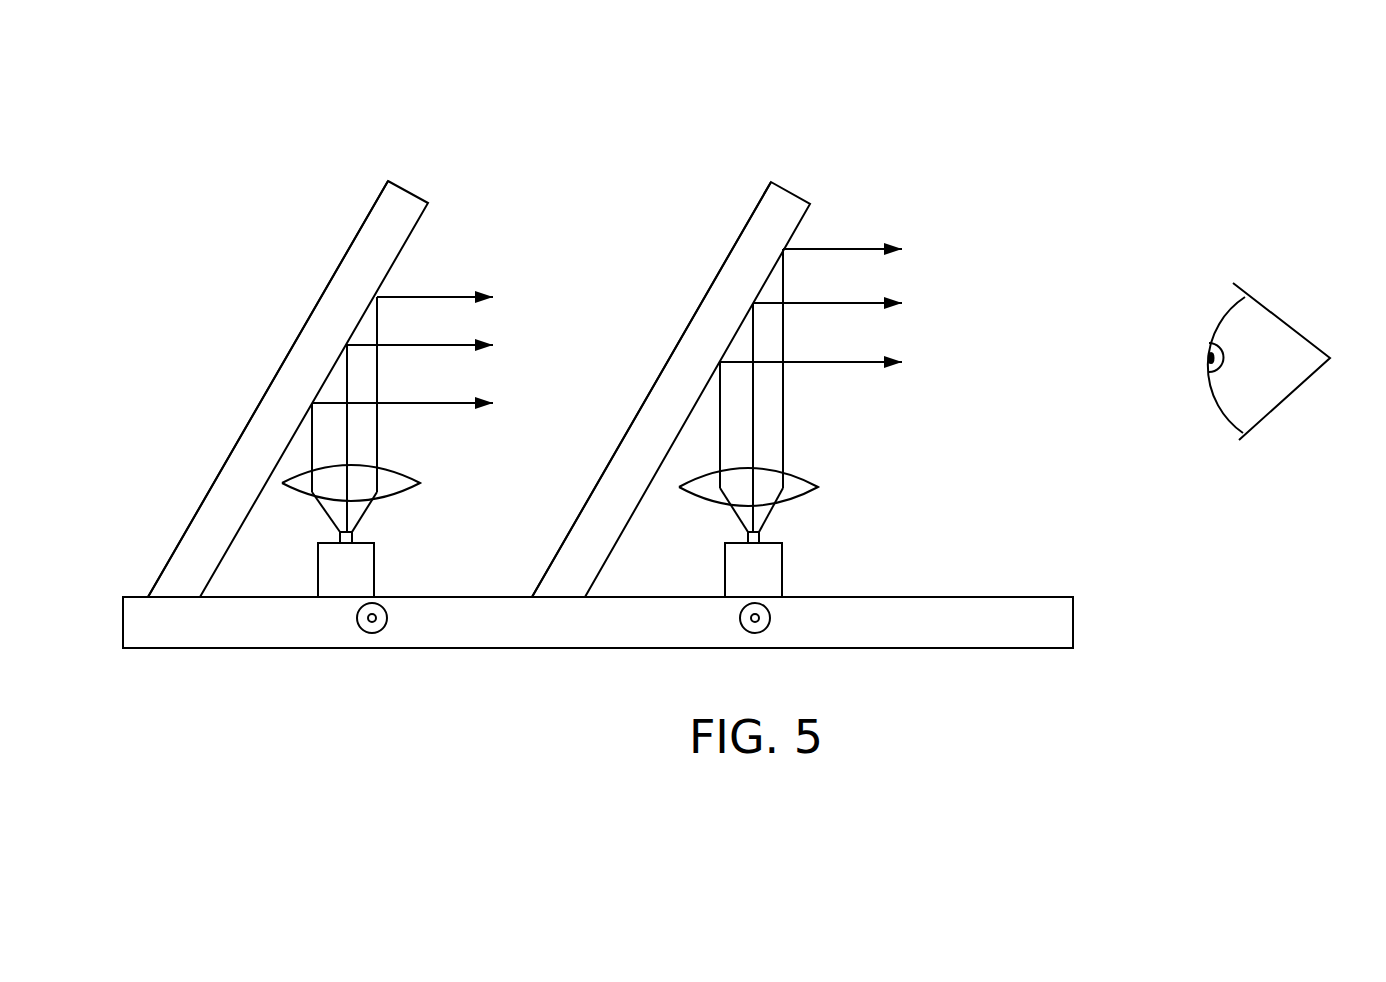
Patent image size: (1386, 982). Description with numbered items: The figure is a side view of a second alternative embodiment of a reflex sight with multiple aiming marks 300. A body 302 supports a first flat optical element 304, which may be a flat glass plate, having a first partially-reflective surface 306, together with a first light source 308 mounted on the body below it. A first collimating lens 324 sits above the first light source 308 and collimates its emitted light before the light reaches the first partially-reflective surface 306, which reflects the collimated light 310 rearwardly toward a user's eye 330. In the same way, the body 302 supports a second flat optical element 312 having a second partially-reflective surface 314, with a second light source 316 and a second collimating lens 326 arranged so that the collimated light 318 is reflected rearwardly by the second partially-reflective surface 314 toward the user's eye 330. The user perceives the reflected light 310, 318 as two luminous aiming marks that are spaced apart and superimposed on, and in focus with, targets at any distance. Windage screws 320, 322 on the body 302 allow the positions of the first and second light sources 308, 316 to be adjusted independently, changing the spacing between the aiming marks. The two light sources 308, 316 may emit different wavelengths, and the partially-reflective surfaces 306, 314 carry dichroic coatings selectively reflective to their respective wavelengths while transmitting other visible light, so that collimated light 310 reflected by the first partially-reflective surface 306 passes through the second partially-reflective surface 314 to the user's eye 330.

The reflex sight with multiple aiming marks 300 is at (943, 90).
The body 302 is at (623, 648).
The first flat optical element 304 is at (413, 192).
The first partially-reflective surface 306 is at (225, 557).
The first light source 308 is at (374, 548).
The collimated light 310 is at (450, 293).
The second flat optical element 312 is at (797, 193).
The second partially-reflective surface 314 is at (625, 530).
The second light source 316 is at (782, 548).
The collimated light 318 is at (860, 247).
The windage screw 320 is at (388, 618).
The windage screw 322 is at (770, 618).
The first collimating lens 324 is at (397, 472).
The second collimating lens 326 is at (800, 475).
The user's eye 330 is at (1258, 302).